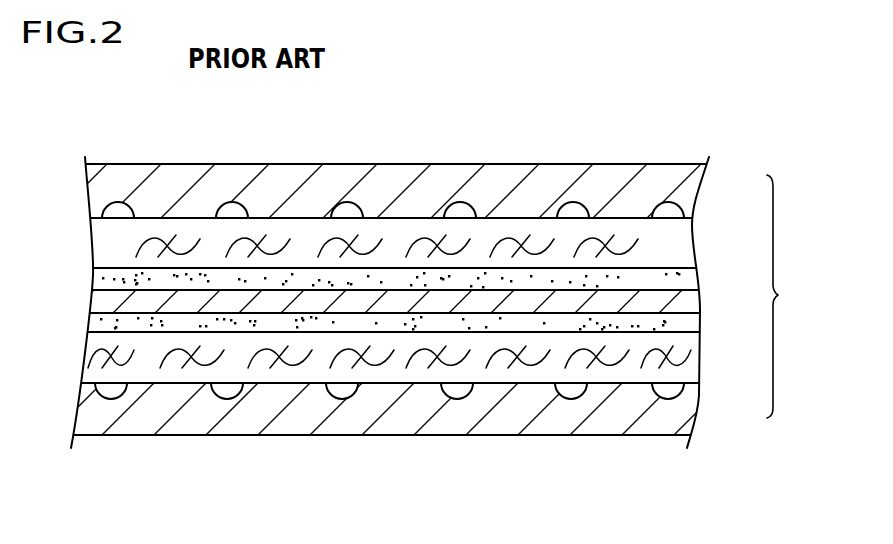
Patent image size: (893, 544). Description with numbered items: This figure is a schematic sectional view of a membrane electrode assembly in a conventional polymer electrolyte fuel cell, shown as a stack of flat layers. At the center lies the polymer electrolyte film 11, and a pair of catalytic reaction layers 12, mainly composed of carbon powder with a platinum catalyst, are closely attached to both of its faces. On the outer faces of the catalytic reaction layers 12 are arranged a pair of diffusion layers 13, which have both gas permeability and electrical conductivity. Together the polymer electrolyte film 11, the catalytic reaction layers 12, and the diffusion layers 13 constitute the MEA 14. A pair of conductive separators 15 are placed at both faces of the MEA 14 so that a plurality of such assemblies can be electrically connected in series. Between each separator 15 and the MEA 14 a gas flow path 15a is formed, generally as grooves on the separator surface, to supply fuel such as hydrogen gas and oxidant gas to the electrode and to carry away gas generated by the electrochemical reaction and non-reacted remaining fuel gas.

The polymer electrolyte film 11 is at (685, 301).
The catalytic reaction layers 12 is at (683, 279).
The diffusion layers 13 is at (682, 248).
The MEA 14 is at (792, 296).
The conductive separator 15 is at (528, 186).
The gas flow path 15a is at (232, 212).